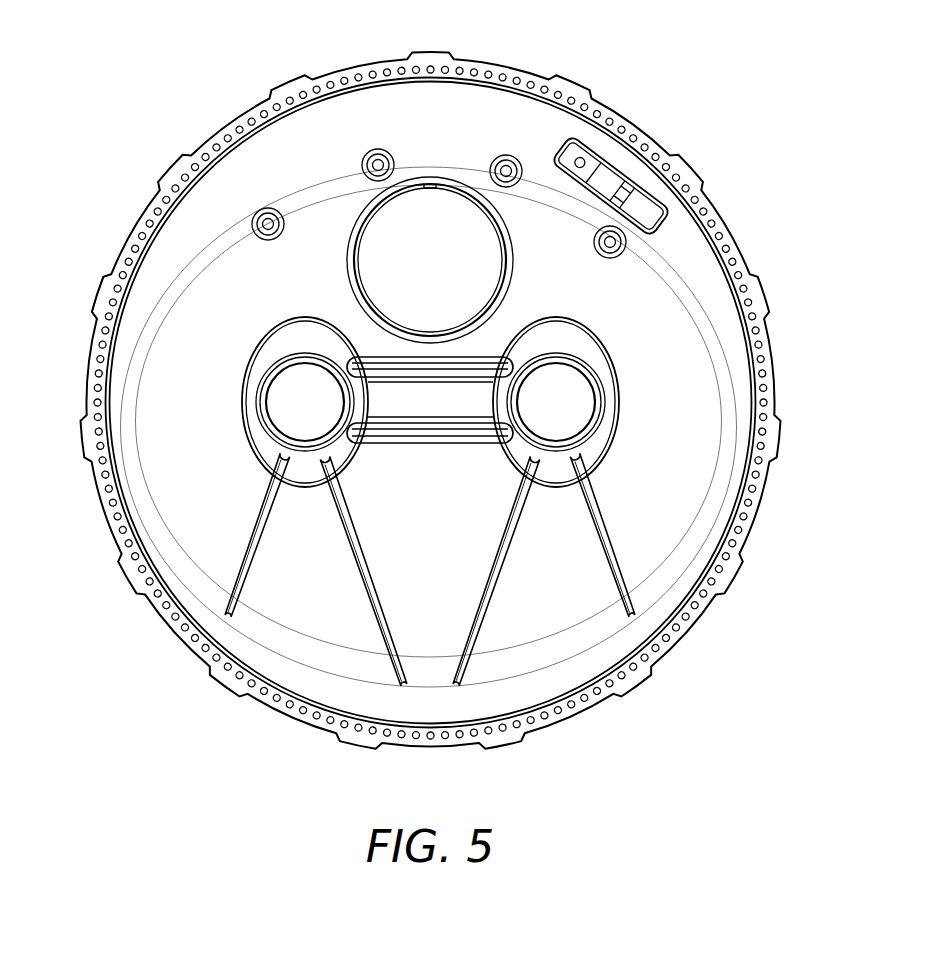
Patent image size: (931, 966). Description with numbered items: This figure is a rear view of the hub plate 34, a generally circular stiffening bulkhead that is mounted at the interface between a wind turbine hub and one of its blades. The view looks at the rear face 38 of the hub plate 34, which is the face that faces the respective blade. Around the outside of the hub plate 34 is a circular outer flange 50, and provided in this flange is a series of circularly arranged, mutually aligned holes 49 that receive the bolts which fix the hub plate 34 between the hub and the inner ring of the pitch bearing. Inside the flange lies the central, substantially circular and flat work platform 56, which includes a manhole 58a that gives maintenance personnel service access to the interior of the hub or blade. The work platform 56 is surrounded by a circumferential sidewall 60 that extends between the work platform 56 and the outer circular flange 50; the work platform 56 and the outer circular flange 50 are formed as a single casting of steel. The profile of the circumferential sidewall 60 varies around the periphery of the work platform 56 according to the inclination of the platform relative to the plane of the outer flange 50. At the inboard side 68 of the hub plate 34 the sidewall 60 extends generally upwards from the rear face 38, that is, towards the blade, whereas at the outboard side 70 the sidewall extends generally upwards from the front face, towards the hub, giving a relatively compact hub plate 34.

The hub plate 34 is at (788, 406).
The rear face 38 is at (645, 528).
The holes 49 is at (504, 72).
The circular outer flange 50 is at (97, 296).
The work platform 56 is at (418, 528).
The manhole 58a is at (413, 276).
The circumferential sidewall 60 is at (358, 112).
The inboard side 68 is at (426, 706).
The outboard side 70 is at (430, 106).